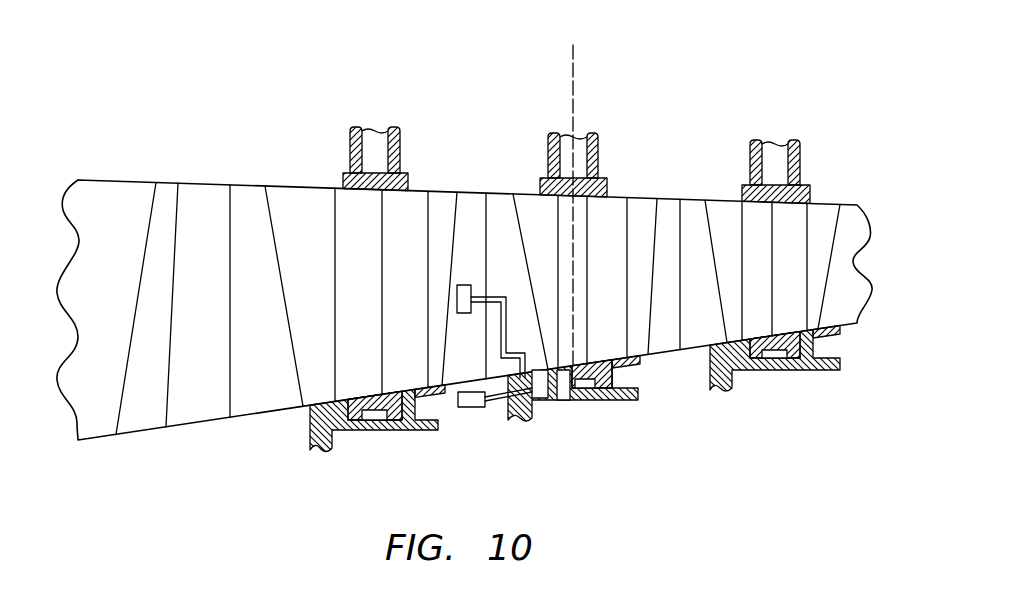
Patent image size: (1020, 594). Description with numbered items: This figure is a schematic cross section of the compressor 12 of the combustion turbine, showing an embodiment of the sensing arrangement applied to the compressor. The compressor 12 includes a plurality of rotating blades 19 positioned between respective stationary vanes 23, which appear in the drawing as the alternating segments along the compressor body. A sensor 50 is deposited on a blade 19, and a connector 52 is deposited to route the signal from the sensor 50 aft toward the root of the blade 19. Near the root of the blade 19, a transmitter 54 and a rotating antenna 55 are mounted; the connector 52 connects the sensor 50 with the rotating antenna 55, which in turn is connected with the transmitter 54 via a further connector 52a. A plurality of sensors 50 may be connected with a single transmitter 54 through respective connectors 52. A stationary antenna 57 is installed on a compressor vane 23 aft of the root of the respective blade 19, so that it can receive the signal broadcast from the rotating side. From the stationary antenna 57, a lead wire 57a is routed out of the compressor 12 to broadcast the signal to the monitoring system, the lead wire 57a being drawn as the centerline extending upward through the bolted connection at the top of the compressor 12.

The compressor 12 is at (264, 146).
The rotating blade 19 is at (220, 247).
The vane 23 is at (373, 248).
The sensor 50 is at (472, 290).
The connector 52 is at (496, 298).
The connector 52a is at (493, 406).
The transmitter 54 is at (473, 408).
The rotating antenna 55 is at (540, 403).
The stationary antenna 57 is at (567, 400).
The lead wire 57a is at (576, 72).